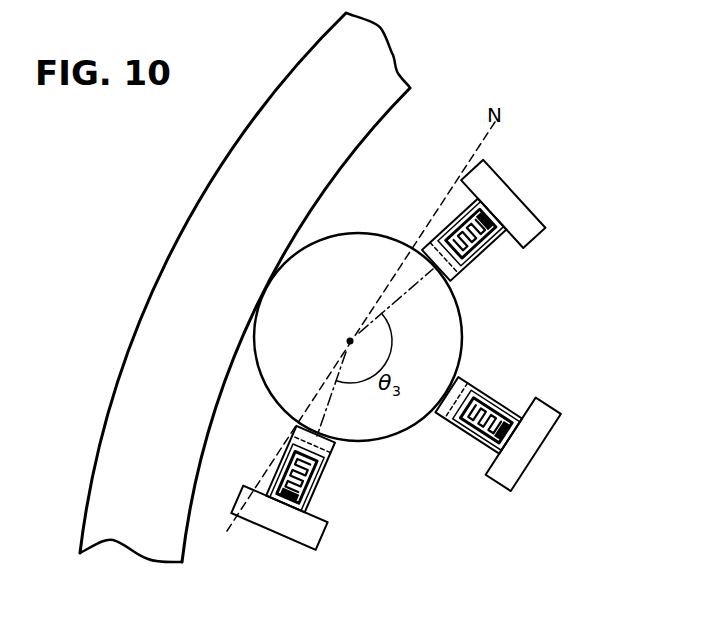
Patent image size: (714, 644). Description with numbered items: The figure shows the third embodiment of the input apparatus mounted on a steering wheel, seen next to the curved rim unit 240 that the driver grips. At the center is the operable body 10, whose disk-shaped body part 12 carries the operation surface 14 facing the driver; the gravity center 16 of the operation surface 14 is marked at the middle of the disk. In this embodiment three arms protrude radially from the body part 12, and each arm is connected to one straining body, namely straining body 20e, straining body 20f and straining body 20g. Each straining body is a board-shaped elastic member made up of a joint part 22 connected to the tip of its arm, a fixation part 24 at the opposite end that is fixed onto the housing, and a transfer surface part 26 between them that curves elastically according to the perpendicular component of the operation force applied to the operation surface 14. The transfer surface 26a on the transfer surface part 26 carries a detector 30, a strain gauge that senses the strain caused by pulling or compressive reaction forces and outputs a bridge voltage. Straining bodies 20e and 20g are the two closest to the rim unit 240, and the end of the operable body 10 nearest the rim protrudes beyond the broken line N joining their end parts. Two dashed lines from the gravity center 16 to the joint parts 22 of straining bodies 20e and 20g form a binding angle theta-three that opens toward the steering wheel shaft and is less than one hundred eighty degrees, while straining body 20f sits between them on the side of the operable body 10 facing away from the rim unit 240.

The rim unit 240 is at (296, 65).
The body part 12 is at (320, 240).
The gravity center 16 is at (270, 295).
The operation surface 14 is at (282, 348).
The operable body 10 is at (360, 222).
The straining body 20e is at (513, 241).
The straining body 20f is at (521, 420).
The straining body 20g is at (297, 509).
The joint part 22 is at (328, 463).
The transfer surface part 26 is at (312, 496).
The transfer surface 26a is at (260, 467).
The detector 30 is at (252, 495).
The fixation part 24 is at (316, 548).